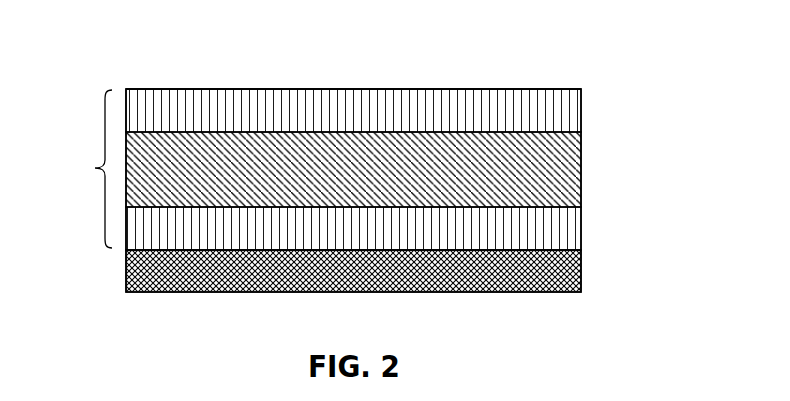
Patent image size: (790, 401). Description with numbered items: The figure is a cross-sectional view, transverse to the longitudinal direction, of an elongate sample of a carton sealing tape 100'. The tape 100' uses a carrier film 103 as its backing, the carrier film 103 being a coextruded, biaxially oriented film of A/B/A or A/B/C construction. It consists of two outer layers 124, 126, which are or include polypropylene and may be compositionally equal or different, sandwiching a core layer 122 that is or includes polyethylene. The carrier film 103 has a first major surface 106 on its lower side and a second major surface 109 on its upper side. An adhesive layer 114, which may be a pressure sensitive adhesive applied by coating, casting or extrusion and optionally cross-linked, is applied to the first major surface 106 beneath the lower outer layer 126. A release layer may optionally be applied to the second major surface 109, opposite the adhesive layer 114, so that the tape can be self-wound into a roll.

The tape 100' is at (352, 154).
The carrier film 103 is at (78, 169).
The second major surface 109 is at (303, 98).
The outer layer 124 is at (581, 115).
The core layer 122 is at (581, 176).
The outer layer 126 is at (581, 233).
The adhesive layer 114 is at (581, 282).
The first major surface 106 is at (283, 253).